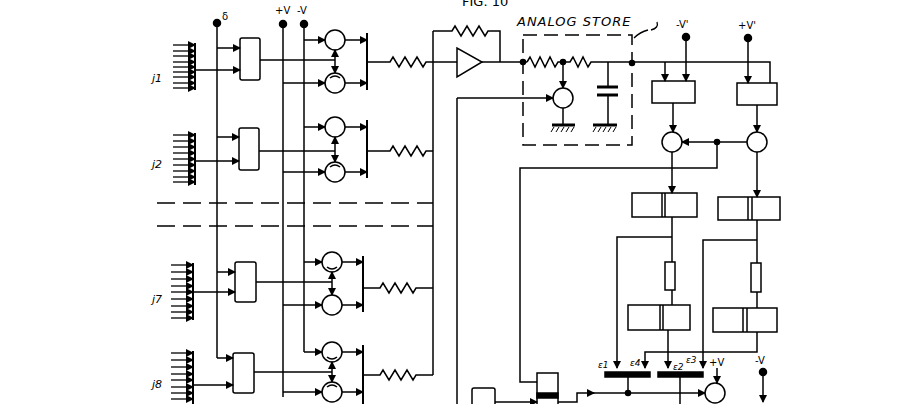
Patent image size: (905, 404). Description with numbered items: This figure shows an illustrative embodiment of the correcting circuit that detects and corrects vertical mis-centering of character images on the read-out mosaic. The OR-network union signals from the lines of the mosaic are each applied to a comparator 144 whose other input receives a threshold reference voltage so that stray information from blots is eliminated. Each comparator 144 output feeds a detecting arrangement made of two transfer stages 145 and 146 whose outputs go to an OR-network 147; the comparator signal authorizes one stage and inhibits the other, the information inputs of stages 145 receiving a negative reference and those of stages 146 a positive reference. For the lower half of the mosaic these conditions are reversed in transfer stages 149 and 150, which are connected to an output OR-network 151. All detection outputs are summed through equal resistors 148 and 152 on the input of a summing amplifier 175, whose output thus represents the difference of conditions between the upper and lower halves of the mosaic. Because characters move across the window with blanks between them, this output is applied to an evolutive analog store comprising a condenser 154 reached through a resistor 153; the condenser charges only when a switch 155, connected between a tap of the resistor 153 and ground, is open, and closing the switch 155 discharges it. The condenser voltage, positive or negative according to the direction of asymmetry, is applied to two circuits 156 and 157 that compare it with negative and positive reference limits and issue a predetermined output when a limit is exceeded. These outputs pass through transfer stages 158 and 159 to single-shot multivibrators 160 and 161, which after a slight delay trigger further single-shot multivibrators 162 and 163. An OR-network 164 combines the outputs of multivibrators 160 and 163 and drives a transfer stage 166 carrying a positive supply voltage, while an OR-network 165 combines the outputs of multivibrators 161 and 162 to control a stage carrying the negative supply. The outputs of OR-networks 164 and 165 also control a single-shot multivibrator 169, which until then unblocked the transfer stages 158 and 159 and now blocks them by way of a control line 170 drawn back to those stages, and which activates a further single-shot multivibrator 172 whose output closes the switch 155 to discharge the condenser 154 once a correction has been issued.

The comparator 144 is at (247, 81).
The transfer stage 145 is at (342, 29).
The transfer stage 146 is at (342, 91).
The OR-network 147 is at (370, 48).
The resistor 148 is at (400, 71).
The transfer stage 149 is at (330, 252).
The transfer stage 150 is at (339, 313).
The OR-network 151 is at (366, 276).
The resistor 152 is at (398, 297).
The resistor 153 is at (648, 64).
The condenser 154 is at (611, 97).
The switch 155 is at (555, 97).
The circuit 156 is at (673, 92).
The circuit 157 is at (757, 94).
The transfer stage 158 is at (680, 136).
The transfer stage 159 is at (765, 137).
The single-shot multivibrator 160 is at (651, 205).
The single-shot multivibrator 161 is at (761, 208).
The single-shot multivibrator 162 is at (659, 310).
The single-shot multivibrator 163 is at (758, 320).
The OR-network 164 is at (627, 383).
The OR-network 165 is at (680, 383).
The transfer stage 166 is at (726, 390).
The single-shot multivibrator 169 is at (548, 381).
The control line 170 is at (618, 262).
The single-shot multivibrator 172 is at (483, 388).
The summing amplifier 175 is at (480, 56).